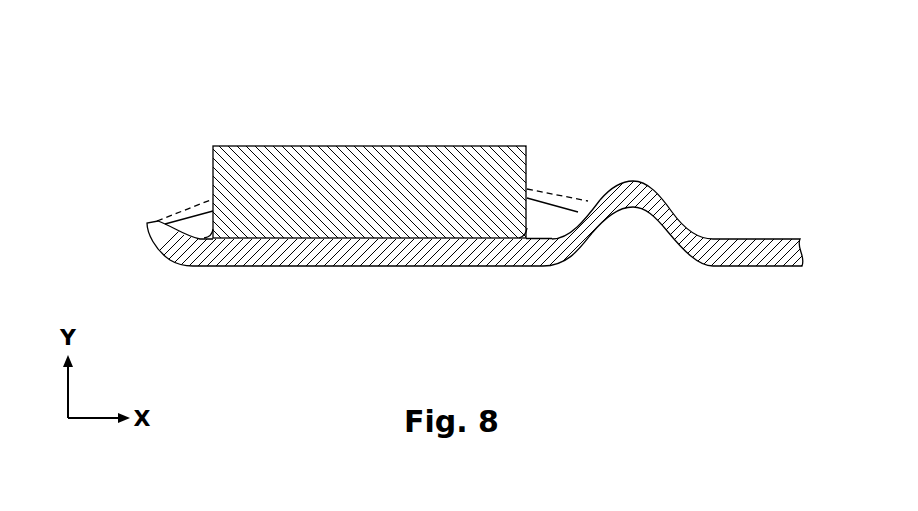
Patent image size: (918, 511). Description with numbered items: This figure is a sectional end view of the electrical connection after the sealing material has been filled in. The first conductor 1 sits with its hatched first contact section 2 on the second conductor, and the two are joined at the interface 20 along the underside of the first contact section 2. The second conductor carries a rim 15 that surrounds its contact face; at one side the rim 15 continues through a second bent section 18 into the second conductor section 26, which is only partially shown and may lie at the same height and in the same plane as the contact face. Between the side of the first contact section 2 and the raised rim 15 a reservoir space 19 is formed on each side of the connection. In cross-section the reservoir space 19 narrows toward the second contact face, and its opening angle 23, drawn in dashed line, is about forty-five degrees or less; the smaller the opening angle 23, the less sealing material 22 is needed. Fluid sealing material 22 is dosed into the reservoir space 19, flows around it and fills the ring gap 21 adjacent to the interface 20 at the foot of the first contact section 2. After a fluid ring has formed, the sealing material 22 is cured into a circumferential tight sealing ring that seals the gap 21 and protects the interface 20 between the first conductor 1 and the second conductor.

The first conductor 1 is at (320, 62).
The first contact section 2 is at (380, 165).
The rim 15 is at (158, 252).
The second bent section 18 is at (643, 197).
The reservoir space 19 is at (376, 156).
The interface 20 is at (380, 240).
The ring gap 21 is at (208, 237).
The sealing material 22 is at (195, 228).
The opening angle 23 is at (204, 205).
The second conductor section 26 is at (760, 248).